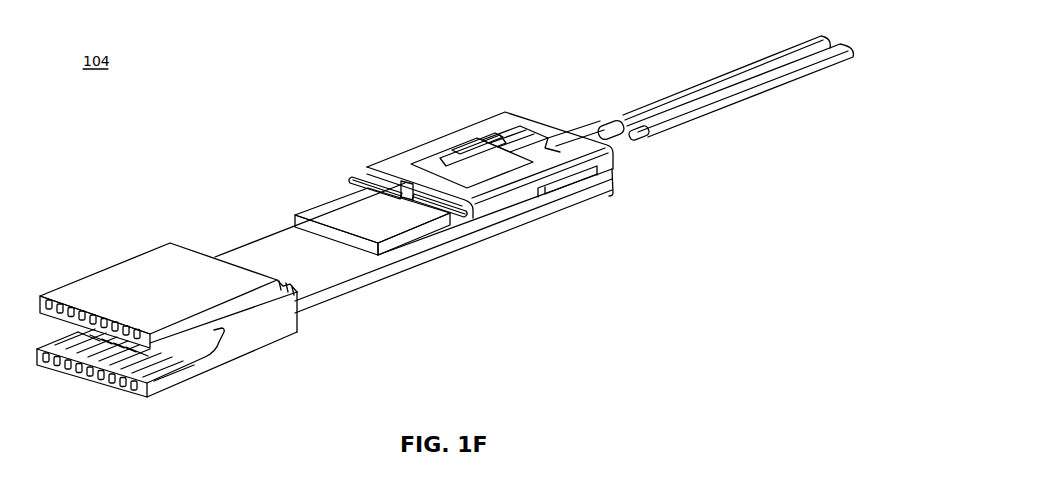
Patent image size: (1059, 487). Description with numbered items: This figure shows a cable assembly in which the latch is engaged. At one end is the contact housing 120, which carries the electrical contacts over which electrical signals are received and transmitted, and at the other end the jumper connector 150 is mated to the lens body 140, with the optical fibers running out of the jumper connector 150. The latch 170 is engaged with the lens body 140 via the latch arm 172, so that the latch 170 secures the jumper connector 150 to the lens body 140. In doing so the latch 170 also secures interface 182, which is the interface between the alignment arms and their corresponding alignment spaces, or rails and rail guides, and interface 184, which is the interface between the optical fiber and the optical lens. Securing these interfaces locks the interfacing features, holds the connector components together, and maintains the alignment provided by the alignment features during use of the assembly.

The contact housing 120 is at (263, 331).
The lens body 140 is at (495, 212).
The jumper connector 150 is at (597, 165).
The latch 170 is at (423, 148).
The latch arm 172 is at (362, 170).
The interface 182 is at (548, 190).
The interface 184 is at (465, 143).